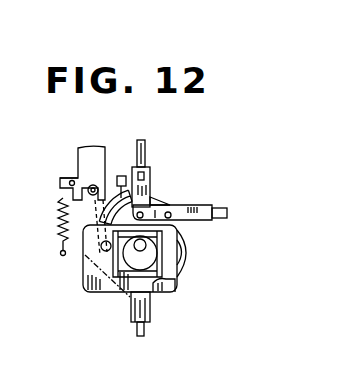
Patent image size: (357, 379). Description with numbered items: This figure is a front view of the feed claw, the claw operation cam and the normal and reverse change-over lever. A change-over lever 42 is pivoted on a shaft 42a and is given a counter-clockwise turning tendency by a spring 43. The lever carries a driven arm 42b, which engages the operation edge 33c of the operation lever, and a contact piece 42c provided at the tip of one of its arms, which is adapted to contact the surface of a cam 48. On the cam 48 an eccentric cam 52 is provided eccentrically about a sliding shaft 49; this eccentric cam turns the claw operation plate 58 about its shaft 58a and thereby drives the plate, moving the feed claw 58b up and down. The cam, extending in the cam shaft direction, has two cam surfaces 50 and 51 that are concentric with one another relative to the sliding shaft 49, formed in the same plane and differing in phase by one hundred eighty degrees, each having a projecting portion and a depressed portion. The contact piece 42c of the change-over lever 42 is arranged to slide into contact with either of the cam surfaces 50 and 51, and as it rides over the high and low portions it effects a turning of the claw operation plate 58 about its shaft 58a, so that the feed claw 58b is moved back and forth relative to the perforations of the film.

The operation edge 33c is at (120, 176).
The change-over lever 42 is at (92, 222).
The shaft 42a is at (92, 177).
The driven arm 42b is at (151, 191).
The contact piece 42c is at (82, 277).
The spring 43 is at (58, 211).
The cam 48 is at (183, 276).
The sliding shaft 49 is at (173, 232).
The cam surface 50 is at (188, 243).
The cam surface 51 is at (185, 258).
The eccentric cam 52 is at (133, 260).
The claw operation plate 58 is at (157, 285).
The shaft 58a is at (148, 172).
The feed claw 58b is at (214, 205).